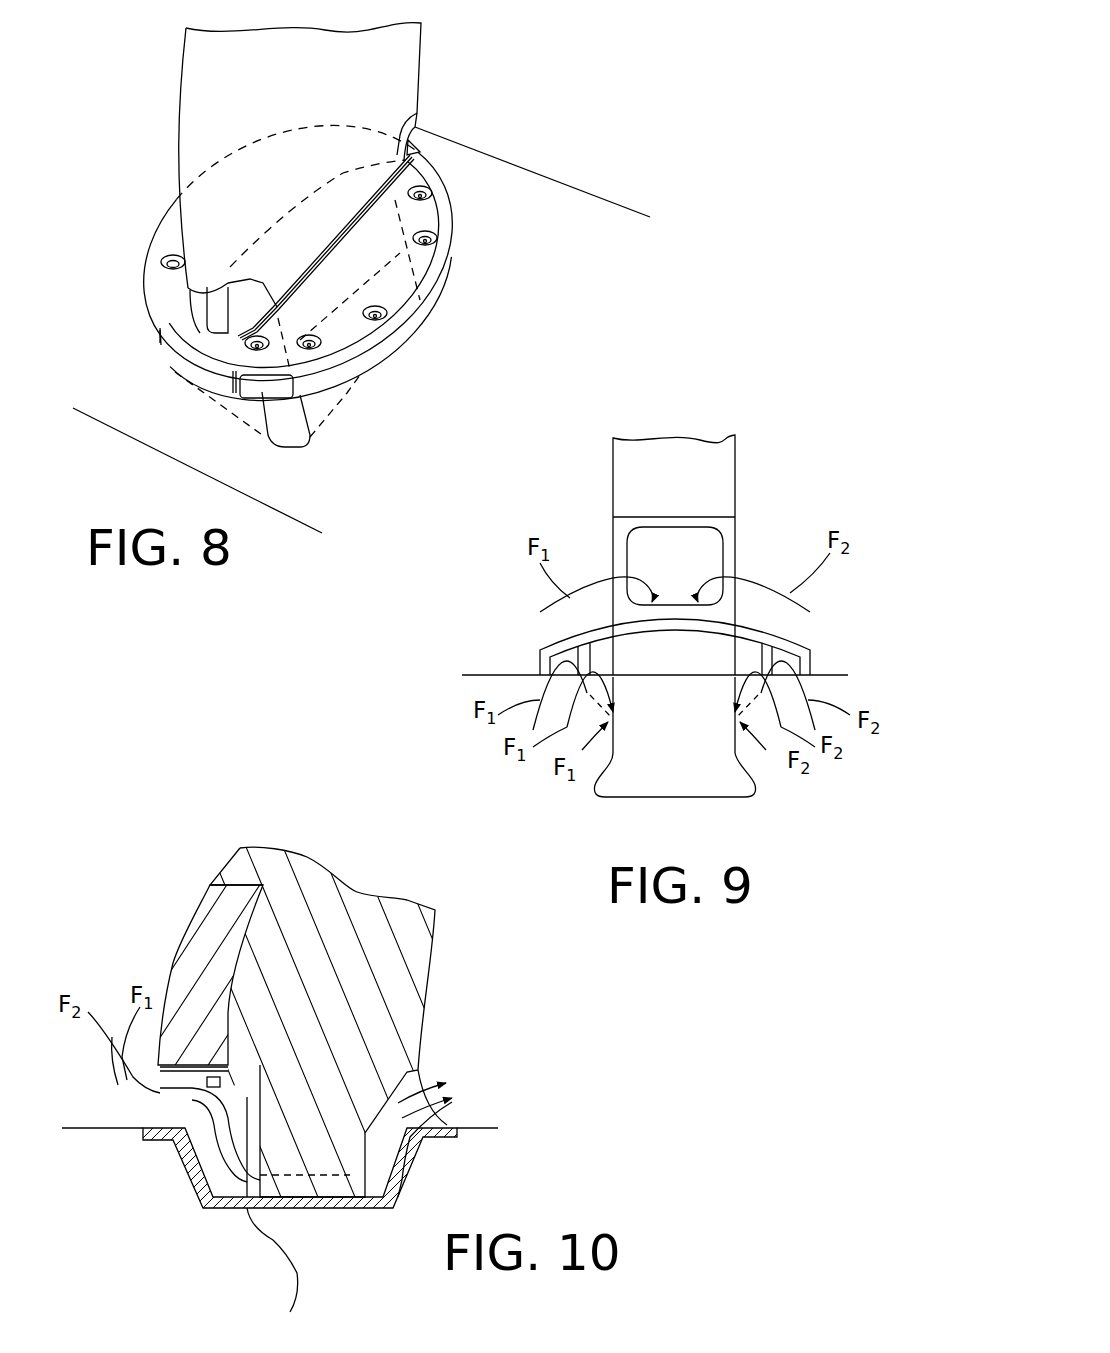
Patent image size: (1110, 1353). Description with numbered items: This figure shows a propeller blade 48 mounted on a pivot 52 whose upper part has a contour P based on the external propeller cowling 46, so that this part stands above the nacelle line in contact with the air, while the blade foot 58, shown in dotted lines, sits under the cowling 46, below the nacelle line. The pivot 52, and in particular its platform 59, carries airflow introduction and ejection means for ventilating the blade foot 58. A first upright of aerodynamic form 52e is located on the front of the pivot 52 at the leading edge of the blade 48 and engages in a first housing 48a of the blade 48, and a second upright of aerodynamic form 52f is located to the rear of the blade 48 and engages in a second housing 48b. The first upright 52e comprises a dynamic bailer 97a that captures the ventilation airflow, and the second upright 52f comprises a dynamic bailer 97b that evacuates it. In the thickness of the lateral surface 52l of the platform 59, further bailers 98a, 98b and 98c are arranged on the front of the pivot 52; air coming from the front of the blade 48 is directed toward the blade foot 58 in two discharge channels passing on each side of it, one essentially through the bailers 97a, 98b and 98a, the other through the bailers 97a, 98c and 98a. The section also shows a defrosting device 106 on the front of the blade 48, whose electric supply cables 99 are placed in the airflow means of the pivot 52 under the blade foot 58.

In FIG. 8, the external propeller cowling 46 is at (598, 217).
In FIG. 9, the external propeller cowling 46 is at (480, 672).
In FIG. 10, the external propeller cowling 46 is at (82, 1126).
In FIG. 8, the blade 48 is at (193, 90).
In FIG. 9, the blade 48 is at (717, 460).
In FIG. 10, the blade 48 is at (243, 862).
In FIG. 8, the first housing 48a is at (233, 295).
In FIG. 9, the first housing 48a is at (707, 537).
In FIG. 10, the first housing 48a is at (163, 1085).
In FIG. 8, the second housing 48b is at (410, 180).
In FIG. 10, the second housing 48b is at (447, 1125).
In FIG. 8, the pivot 52 is at (170, 280).
In FIG. 9, the pivot 52 is at (800, 645).
In FIG. 10, the pivot 52 is at (178, 1112).
In FIG. 8, the first upright of aerodynamic form 52e is at (228, 280).
In FIG. 8, the second upright of aerodynamic form 52f is at (418, 133).
In FIG. 8, the lateral surface 52l is at (430, 317).
In FIG. 8, the blade foot 58 is at (400, 260).
In FIG. 9, the blade foot 58 is at (720, 787).
In FIG. 10, the blade foot 58 is at (320, 1160).
In FIG. 8, the platform 59 is at (427, 278).
In FIG. 9, the platform 59 is at (608, 630).
In FIG. 8, the dynamic bailer 97a is at (533, 185).
In FIG. 8, the dynamic bailer 97b is at (410, 130).
In FIG. 8, the bailer 98a is at (193, 367).
In FIG. 9, the bailer 98a is at (737, 647).
In FIG. 8, the bailer 98b is at (155, 310).
In FIG. 9, the bailer 98b is at (560, 653).
In FIG. 8, the bailer 98c is at (260, 380).
In FIG. 9, the bailer 98c is at (783, 660).
In FIG. 10, the electric supply cables 99 is at (277, 1242).
In FIG. 10, the defrosting device 106 is at (197, 947).
In FIG. 8, the contour P is at (400, 353).